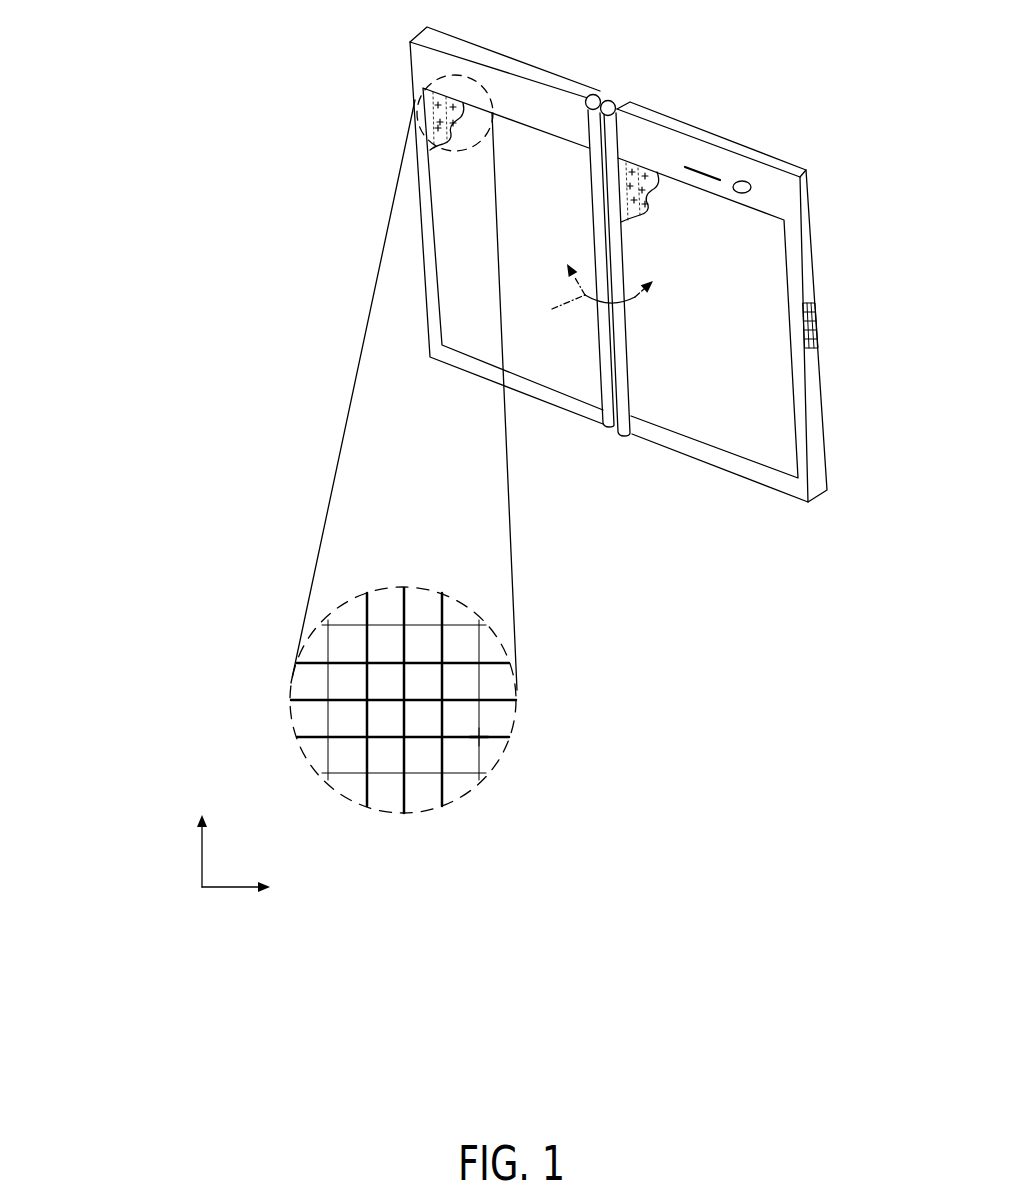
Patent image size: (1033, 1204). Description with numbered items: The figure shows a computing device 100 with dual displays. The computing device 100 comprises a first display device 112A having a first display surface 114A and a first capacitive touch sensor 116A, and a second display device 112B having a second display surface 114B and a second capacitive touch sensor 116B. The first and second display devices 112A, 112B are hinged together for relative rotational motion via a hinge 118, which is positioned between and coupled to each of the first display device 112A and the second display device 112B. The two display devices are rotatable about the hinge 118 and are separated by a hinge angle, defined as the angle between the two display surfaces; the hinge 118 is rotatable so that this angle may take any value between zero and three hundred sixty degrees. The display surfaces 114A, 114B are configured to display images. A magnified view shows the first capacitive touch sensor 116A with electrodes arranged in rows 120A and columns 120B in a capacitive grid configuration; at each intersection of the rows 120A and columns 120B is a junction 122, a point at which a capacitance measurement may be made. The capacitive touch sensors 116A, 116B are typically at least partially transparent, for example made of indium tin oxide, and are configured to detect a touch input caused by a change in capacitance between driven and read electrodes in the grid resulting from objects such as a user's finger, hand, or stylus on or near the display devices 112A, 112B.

The computing device 100 is at (851, 67).
The first display device 112A is at (422, 60).
The second display device 112B is at (784, 192).
The first display surface 114A is at (555, 364).
The second display surface 114B is at (732, 430).
The first capacitive touch sensor 116A is at (428, 140).
The second capacitive touch sensor 116B is at (622, 162).
The hinge 118 is at (608, 100).
The rows 120A is at (259, 737).
The columns 120B is at (441, 843).
The junction 122 is at (489, 748).